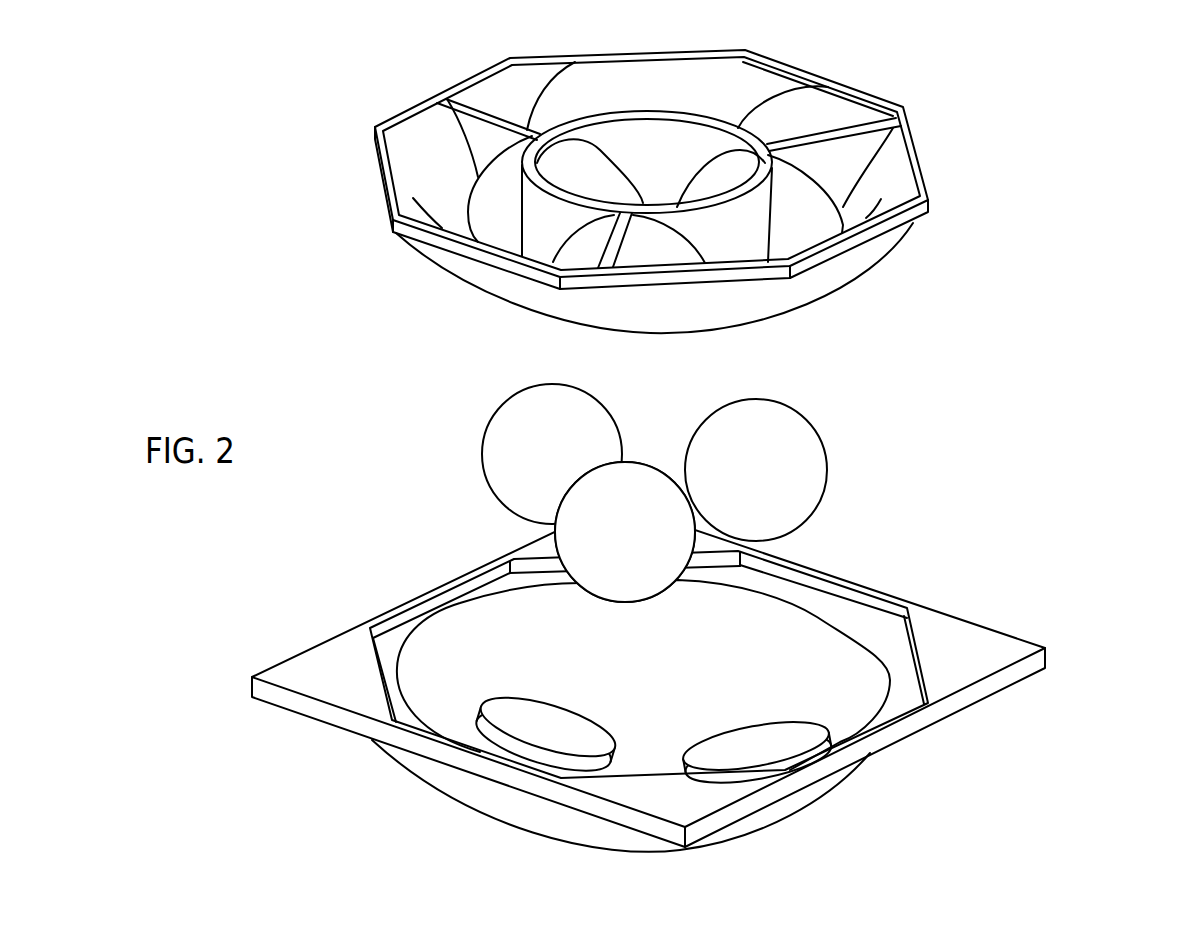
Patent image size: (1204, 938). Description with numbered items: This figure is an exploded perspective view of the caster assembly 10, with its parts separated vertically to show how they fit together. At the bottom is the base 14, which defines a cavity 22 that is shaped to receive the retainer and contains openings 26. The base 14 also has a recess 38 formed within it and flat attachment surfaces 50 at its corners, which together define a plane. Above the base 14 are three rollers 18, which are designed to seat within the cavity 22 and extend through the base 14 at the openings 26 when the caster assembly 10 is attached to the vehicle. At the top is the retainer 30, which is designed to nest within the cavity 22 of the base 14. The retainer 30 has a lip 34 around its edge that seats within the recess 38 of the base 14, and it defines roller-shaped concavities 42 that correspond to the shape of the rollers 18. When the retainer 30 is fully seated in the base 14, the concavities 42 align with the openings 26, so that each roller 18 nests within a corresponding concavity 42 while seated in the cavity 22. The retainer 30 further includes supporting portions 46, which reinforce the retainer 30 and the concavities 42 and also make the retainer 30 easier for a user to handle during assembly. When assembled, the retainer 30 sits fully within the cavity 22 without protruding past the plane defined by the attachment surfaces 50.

The caster assembly 10 is at (1121, 129).
The base 14 is at (843, 788).
The rollers 18 is at (602, 400).
The cavity 22 is at (850, 640).
The openings 26 is at (765, 747).
The retainer 30 is at (918, 145).
The lip 34 is at (396, 233).
The recess 38 is at (428, 620).
The concavities 42 is at (652, 235).
The supporting portions 46 is at (478, 123).
The attachment surfaces 50 is at (332, 678).